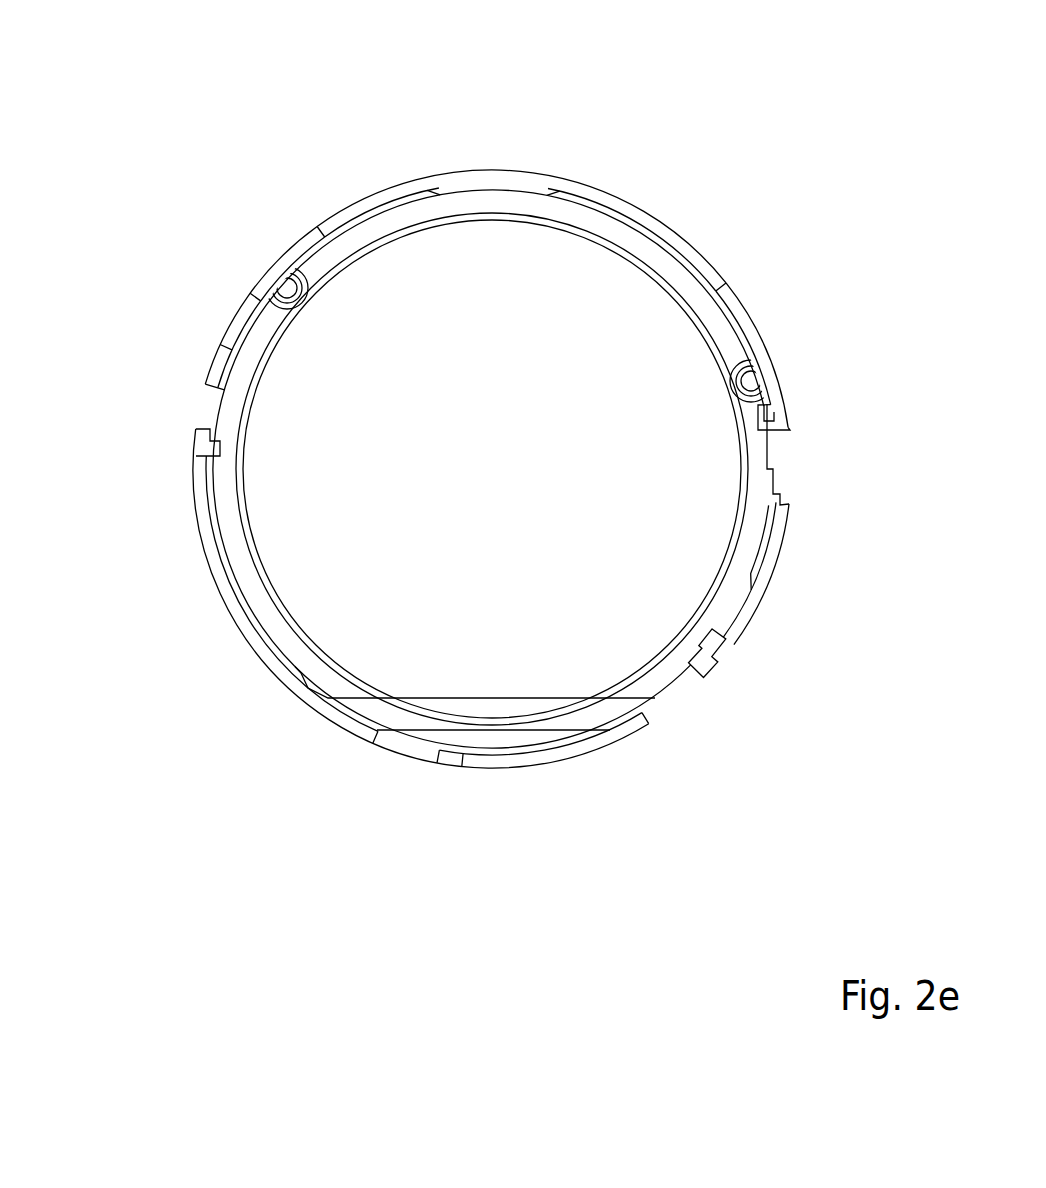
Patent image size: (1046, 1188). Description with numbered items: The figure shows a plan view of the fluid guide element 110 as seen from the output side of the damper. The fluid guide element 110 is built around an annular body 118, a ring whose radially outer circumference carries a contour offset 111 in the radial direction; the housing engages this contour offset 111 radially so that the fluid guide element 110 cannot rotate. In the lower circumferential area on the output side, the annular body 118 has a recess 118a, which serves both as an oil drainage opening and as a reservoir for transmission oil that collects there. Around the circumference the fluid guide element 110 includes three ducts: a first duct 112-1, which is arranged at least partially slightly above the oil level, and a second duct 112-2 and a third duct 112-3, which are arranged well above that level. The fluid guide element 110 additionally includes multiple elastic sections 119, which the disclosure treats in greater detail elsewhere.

The fluid guide element 110 is at (625, 150).
The contour offset 111 is at (494, 165).
The annular body 118 is at (386, 222).
The recess 118a is at (437, 753).
The elastic sections 119 is at (281, 247).
The first duct 112-1 is at (705, 681).
The second duct 112-2 is at (778, 448).
The third duct 112-3 is at (213, 409).